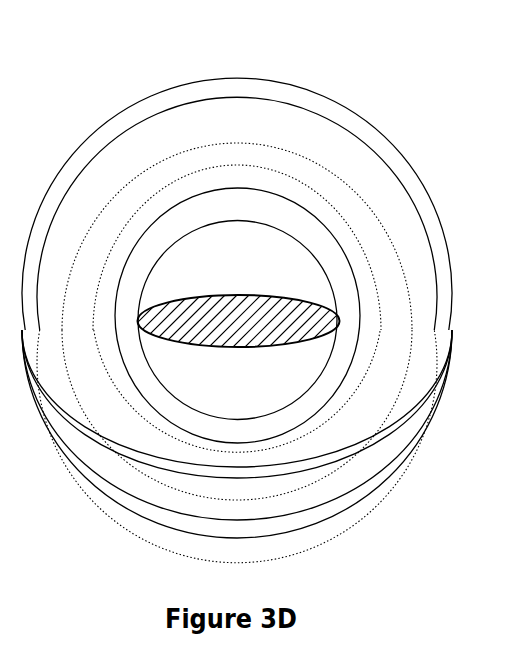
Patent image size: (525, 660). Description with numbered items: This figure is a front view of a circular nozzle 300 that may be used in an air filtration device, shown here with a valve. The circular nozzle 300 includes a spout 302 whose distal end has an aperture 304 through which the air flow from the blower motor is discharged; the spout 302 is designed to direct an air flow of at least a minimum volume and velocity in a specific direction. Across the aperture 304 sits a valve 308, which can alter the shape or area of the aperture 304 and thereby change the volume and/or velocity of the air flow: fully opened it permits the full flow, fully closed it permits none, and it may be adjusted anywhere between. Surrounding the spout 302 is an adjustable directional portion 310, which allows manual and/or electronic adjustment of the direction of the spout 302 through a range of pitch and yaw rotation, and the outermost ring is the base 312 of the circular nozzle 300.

The circular nozzle 300 is at (40, 124).
The spout 302 is at (175, 230).
The aperture 304 is at (239, 262).
The valve 308 is at (260, 312).
The adjustable directional portion 310 is at (390, 224).
The base 312 is at (381, 476).